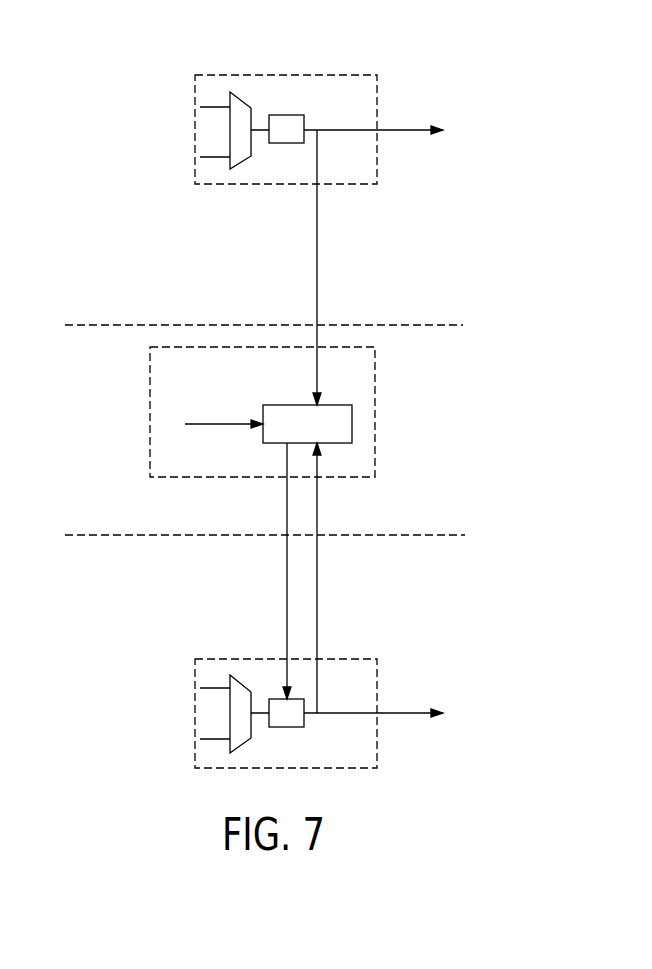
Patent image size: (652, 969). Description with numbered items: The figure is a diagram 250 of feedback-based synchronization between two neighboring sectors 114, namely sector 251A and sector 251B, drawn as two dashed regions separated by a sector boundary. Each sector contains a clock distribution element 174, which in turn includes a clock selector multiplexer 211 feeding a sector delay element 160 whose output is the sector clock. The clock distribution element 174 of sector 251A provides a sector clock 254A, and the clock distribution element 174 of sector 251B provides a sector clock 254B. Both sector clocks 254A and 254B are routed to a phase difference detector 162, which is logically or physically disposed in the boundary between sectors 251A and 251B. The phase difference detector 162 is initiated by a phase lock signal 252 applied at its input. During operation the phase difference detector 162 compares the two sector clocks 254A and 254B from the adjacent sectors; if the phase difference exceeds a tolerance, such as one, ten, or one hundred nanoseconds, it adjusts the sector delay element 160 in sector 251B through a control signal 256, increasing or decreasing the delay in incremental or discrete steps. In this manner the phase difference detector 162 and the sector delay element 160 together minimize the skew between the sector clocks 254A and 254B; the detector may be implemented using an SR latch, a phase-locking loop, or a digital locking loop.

The diagram 250 is at (175, 48).
The clock selector multiplexer 211 is at (236, 94).
The sector delay element 160 is at (287, 115).
The clock distribution element 174 is at (377, 160).
The sector clock 254A is at (317, 245).
The sector clock 254B is at (317, 610).
The control signal 256 is at (287, 595).
The sectors 114 is at (462, 252).
The sector 251A is at (346, 200).
The sector 251B is at (340, 651).
The phase difference detector 162 is at (376, 428).
The phase lock signal 252 is at (202, 426).